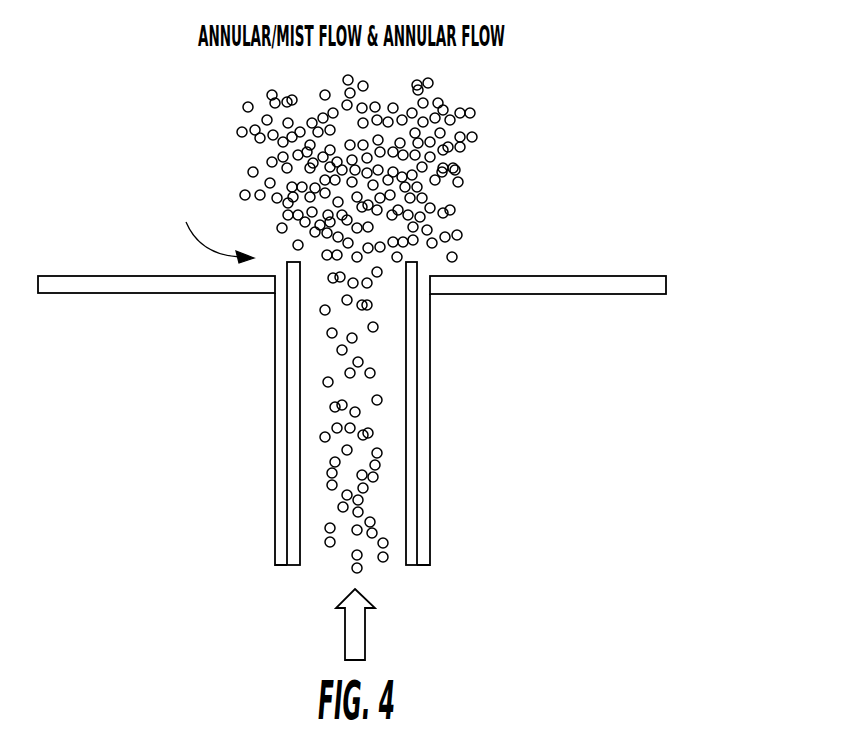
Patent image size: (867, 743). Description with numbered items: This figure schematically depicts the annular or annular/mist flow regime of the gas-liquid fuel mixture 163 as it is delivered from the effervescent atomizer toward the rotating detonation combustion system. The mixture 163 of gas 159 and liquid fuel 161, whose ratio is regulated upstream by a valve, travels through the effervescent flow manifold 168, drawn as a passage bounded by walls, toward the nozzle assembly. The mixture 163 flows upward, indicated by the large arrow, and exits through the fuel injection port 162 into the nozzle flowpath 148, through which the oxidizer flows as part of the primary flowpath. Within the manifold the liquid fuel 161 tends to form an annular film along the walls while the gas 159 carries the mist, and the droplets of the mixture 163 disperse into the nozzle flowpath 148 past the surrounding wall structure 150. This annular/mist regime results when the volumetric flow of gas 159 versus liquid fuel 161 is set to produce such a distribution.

The nozzle flowpath 148 is at (161, 123).
The wall plate 150 is at (132, 285).
The gas 159 is at (380, 515).
The liquid fuel 161 is at (410, 397).
The fuel injection port 162 is at (211, 228).
The gas-liquid fuel mixture 163 is at (450, 113).
The effervescent flow manifold 168 is at (286, 508).